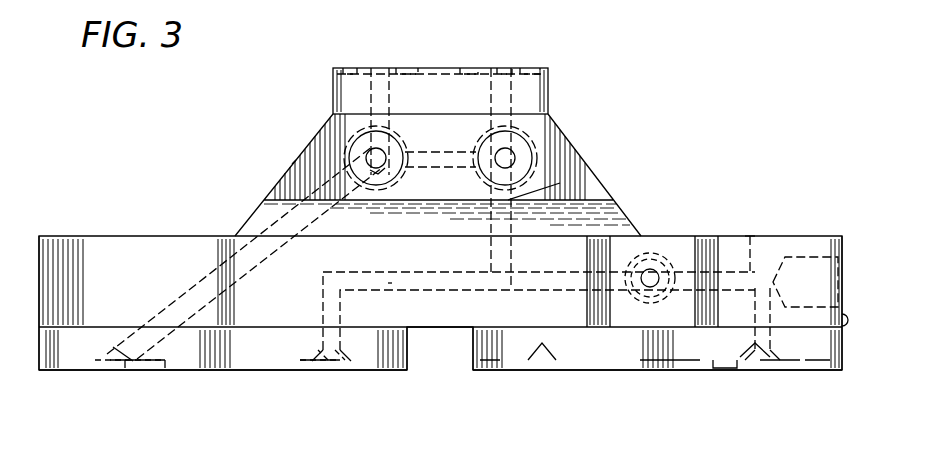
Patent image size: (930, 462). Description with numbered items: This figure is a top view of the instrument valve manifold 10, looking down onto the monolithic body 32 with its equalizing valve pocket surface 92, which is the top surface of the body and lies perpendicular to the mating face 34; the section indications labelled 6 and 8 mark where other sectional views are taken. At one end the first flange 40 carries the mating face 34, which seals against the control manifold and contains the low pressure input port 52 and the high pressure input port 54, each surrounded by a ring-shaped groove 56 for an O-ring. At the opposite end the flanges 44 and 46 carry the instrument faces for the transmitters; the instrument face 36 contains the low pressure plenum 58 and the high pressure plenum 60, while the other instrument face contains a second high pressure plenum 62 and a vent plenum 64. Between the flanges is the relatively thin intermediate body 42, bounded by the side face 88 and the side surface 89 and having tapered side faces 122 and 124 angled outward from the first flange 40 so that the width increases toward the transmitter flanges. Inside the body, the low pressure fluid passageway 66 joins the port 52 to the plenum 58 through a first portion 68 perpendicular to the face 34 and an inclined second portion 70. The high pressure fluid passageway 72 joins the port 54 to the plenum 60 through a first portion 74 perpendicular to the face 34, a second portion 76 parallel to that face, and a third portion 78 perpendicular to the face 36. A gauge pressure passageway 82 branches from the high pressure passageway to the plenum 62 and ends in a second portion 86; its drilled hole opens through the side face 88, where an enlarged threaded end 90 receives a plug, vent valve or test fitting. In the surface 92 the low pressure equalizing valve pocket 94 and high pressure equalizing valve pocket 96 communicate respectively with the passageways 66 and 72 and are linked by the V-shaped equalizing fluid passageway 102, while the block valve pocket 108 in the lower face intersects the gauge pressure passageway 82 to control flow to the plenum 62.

The instrument valve manifold 10 is at (740, 165).
The monolithic body 32 is at (57, 318).
The mating face 34 is at (432, 68).
The instrument face 36 is at (208, 370).
The first flange 40 is at (332, 88).
The intermediate body 42 is at (318, 140).
The flange 44 is at (58, 362).
The flange 46 is at (840, 373).
The low pressure input port 52 is at (383, 80).
The high pressure input port 54 is at (500, 72).
The ring-shaped groove 56 is at (347, 72).
The low pressure plenum 58 is at (124, 368).
The high pressure plenum 60 is at (333, 368).
The high pressure plenum 62 is at (750, 368).
The vent plenum 64 is at (613, 270).
The low pressure fluid passageway 66 is at (258, 250).
The first portion 68 is at (378, 122).
The second portion 70 is at (195, 297).
The high pressure fluid passageway 72 is at (463, 283).
The first portion 74 is at (560, 183).
The second portion 76 is at (390, 283).
The third portion 78 is at (323, 307).
The gauge pressure passageway 82 is at (750, 235).
The second portion 86 is at (753, 310).
The side face 88 is at (842, 328).
The side surface 89 is at (36, 306).
The threads 90 is at (805, 304).
The equalizing valve pocket surface 92 is at (557, 153).
The low pressure equalizing valve pocket 94 is at (395, 152).
The high pressure equalizing valve pocket 96 is at (522, 144).
The equalizing fluid passageway 102 is at (428, 176).
The block valve pocket 108 is at (648, 295).
The tapered side face 122 is at (606, 186).
The tapered side face 124 is at (292, 166).
The section line 6- 6 is at (46, 278).
The section line 8- 8 is at (203, 157).